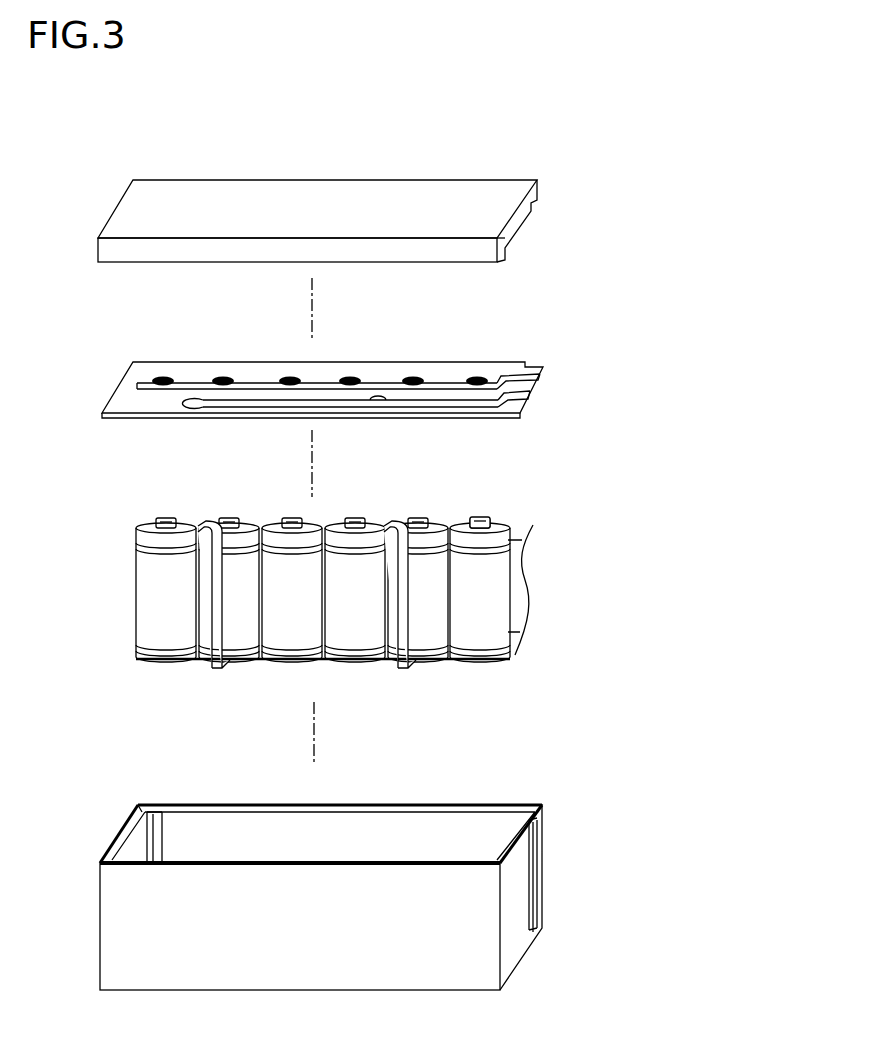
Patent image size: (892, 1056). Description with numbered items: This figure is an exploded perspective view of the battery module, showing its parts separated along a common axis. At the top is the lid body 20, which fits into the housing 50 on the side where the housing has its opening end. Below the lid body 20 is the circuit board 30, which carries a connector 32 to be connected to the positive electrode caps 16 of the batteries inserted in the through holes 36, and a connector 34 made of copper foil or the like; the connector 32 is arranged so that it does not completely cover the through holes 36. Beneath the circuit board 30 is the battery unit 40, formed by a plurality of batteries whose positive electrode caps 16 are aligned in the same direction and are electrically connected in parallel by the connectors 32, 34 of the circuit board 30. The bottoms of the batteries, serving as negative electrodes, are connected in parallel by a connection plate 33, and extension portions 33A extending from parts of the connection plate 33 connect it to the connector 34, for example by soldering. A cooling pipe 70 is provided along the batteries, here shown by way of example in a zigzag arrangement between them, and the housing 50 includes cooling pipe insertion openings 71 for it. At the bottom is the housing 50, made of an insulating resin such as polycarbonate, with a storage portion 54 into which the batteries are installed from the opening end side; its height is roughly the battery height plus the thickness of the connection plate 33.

The lid body 20 is at (467, 203).
The circuit board 30 is at (361, 366).
The through holes 36 is at (477, 378).
The connector 32 is at (543, 372).
The connector 34 is at (533, 395).
The battery unit 40 is at (332, 584).
The cooling pipe 70 is at (142, 602).
The positive electrode caps 16 is at (487, 517).
The connection plate 33 is at (450, 657).
The extension portions 33A is at (412, 557).
The housing 50 is at (358, 873).
The storage portion 54 is at (433, 832).
The cooling pipe insertion openings 71 is at (177, 803).